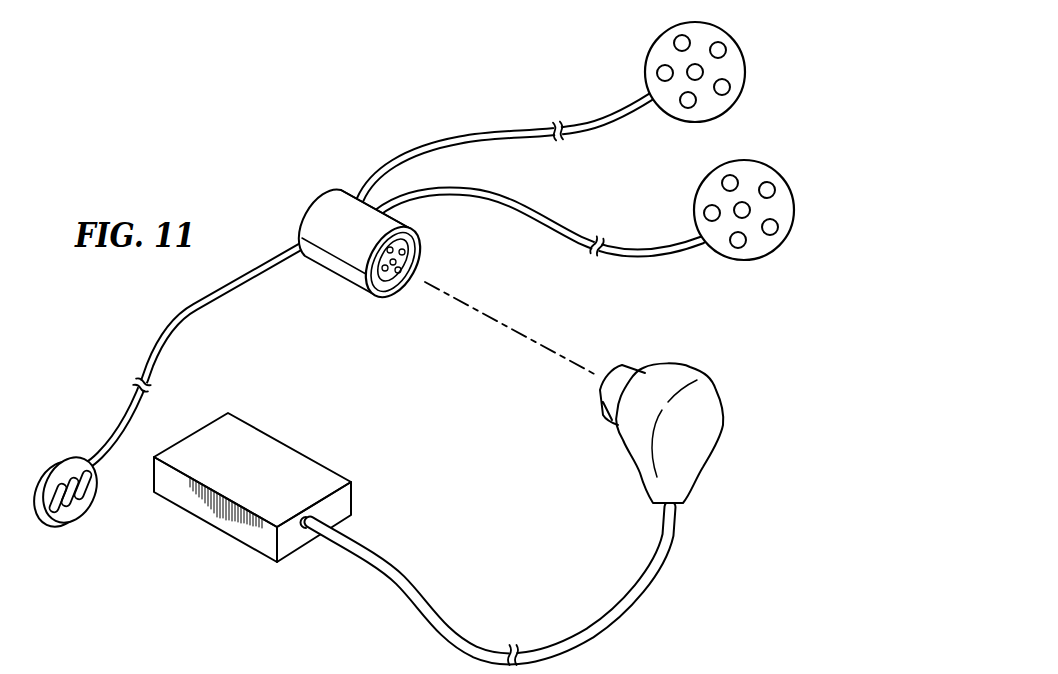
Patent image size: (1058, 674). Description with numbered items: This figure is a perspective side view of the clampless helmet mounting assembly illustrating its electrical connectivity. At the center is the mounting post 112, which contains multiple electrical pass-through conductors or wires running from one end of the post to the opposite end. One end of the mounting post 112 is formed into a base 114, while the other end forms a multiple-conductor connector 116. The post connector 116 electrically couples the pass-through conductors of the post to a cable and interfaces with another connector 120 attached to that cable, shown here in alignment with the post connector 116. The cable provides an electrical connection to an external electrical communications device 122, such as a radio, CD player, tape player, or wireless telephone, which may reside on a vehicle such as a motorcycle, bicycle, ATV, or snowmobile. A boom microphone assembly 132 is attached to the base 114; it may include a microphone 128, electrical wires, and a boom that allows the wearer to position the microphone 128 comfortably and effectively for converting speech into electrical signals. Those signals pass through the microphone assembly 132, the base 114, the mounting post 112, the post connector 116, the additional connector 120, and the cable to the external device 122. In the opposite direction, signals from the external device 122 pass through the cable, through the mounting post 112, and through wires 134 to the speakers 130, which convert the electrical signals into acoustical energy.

The mounting post 112 is at (362, 249).
The base 114 is at (325, 205).
The multiple-conductor connector 116 is at (407, 277).
The connector 120 is at (708, 380).
The external electrical communications device 122 is at (248, 548).
The microphone 128 is at (67, 456).
The speakers 130 is at (743, 40).
The boom microphone assembly 132 is at (160, 333).
The wires 134 is at (611, 125).